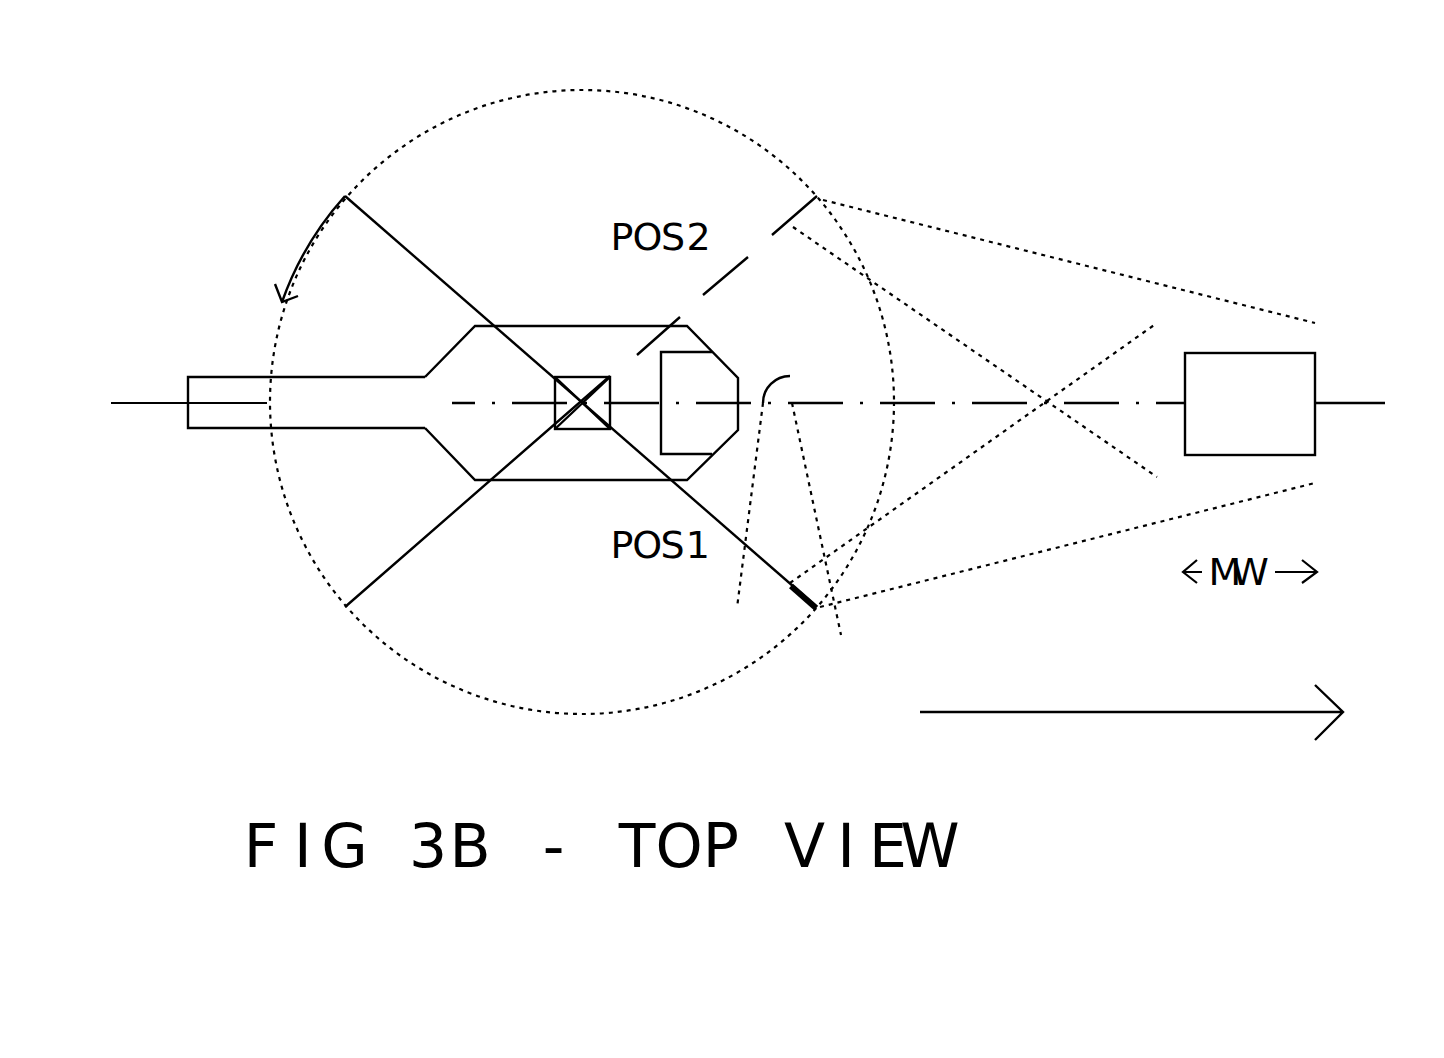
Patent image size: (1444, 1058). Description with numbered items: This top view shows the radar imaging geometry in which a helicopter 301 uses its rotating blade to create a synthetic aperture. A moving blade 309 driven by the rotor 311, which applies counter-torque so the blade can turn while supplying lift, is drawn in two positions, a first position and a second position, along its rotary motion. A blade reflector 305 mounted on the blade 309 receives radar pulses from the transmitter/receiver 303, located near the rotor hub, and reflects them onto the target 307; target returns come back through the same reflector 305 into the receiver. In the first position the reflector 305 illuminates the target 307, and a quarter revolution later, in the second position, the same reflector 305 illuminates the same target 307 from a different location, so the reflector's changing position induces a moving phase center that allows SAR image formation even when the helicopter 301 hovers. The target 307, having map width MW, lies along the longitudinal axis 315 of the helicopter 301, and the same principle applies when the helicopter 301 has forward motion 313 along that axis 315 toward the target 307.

The helicopter 301 is at (437, 453).
The transmitter/receiver 303 is at (775, 373).
The blade reflector 305 is at (793, 607).
The target 307 is at (1250, 404).
The moving blade 309 is at (420, 240).
The rotor 311 is at (147, 390).
The forward motion 313 is at (1131, 719).
The longitudinal axis 315 is at (934, 245).